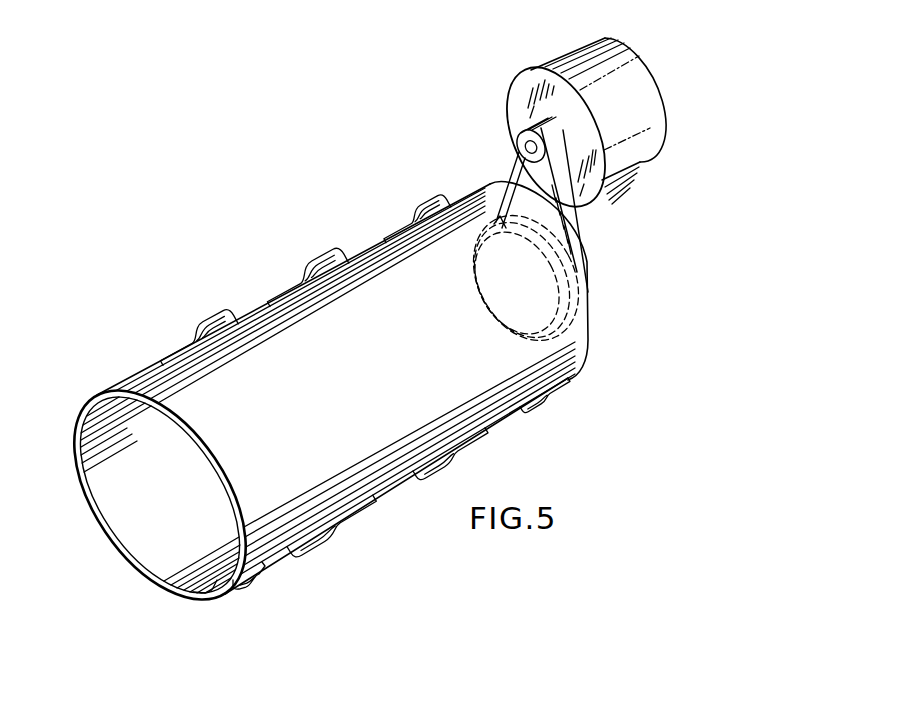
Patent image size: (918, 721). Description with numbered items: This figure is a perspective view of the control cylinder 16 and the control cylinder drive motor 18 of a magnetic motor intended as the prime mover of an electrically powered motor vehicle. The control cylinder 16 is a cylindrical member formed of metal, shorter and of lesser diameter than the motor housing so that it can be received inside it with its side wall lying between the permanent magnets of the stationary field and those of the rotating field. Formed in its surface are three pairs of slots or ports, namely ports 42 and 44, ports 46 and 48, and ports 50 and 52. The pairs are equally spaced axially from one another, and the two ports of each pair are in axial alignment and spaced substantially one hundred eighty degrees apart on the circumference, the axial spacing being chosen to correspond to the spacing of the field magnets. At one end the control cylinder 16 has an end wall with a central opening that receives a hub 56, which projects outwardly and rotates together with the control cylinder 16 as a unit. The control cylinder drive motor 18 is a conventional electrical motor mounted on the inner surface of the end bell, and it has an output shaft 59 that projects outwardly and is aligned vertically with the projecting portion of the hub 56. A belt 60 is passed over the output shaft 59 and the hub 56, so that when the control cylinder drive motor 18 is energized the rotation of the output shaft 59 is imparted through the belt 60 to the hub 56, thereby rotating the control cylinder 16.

The control cylinder 16 is at (88, 392).
The control cylinder drive motor 18 is at (540, 50).
The port 42 is at (173, 362).
The port 44 is at (250, 578).
The port 46 is at (289, 298).
The port 48 is at (364, 508).
The port 50 is at (401, 232).
The port 52 is at (478, 433).
The hub 56 is at (589, 287).
The output shaft 59 is at (525, 149).
The belt 60 is at (580, 226).